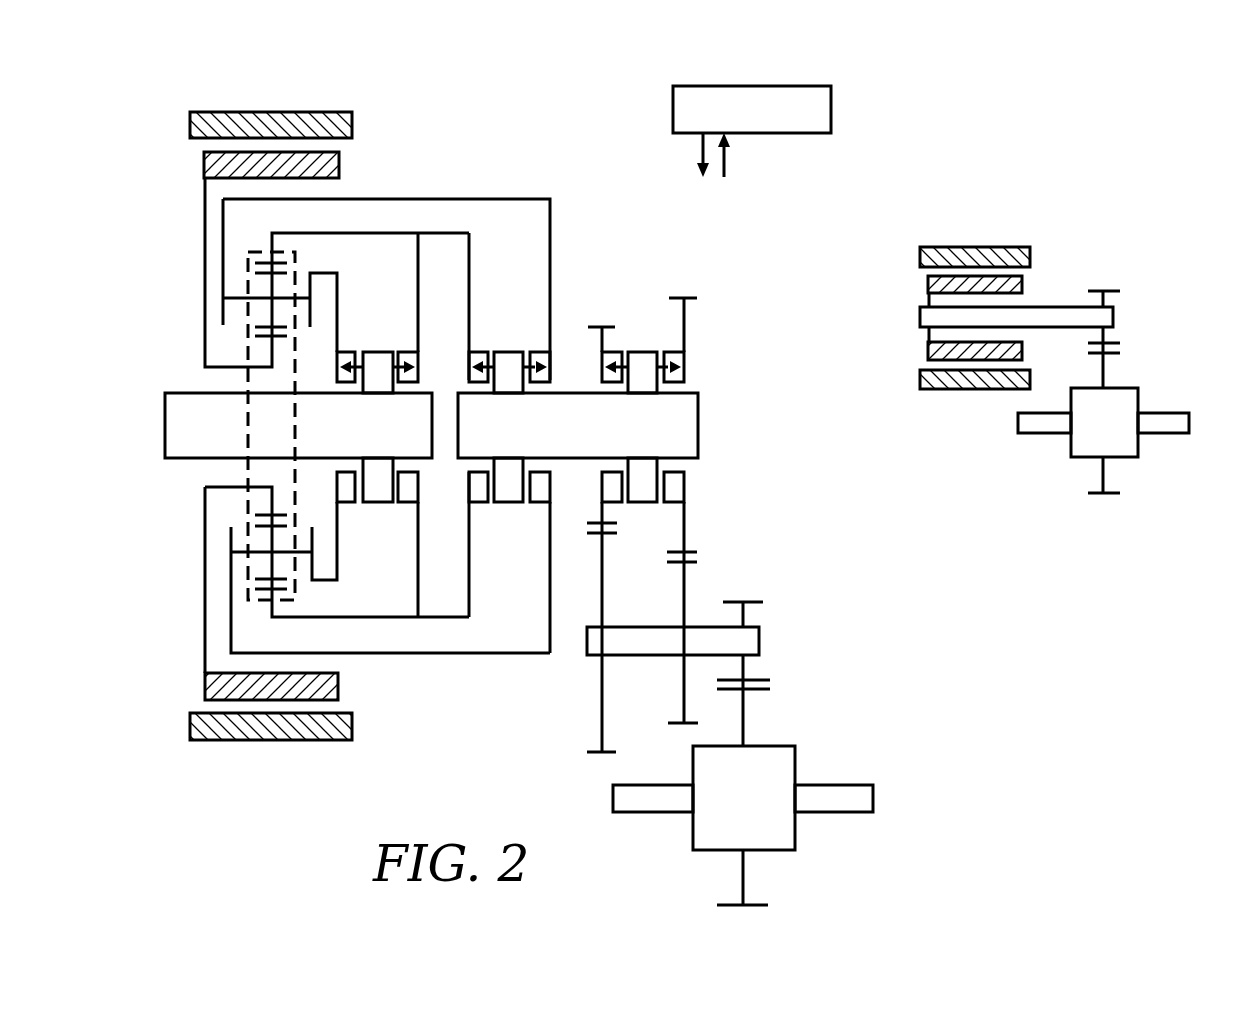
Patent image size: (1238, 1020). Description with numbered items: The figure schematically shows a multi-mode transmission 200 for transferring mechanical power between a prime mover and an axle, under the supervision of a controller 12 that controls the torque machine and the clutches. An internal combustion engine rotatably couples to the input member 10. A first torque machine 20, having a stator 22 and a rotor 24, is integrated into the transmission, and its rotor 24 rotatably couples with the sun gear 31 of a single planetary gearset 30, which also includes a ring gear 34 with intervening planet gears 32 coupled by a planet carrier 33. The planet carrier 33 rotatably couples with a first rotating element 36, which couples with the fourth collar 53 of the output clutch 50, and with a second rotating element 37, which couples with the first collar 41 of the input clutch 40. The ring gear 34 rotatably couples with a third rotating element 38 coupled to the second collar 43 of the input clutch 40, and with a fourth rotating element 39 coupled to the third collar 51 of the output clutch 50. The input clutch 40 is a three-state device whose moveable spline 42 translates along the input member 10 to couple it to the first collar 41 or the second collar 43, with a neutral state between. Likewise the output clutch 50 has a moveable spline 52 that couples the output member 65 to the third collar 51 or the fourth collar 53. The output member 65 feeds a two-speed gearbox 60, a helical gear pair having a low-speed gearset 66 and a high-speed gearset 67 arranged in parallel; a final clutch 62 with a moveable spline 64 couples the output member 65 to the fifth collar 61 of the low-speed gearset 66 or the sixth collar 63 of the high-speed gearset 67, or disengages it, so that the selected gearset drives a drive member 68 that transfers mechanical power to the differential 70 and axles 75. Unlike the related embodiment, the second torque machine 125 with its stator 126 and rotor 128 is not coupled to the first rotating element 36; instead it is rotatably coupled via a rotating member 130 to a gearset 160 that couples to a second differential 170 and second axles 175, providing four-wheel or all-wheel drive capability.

The input member 10 is at (174, 428).
The controller 12 is at (752, 131).
The first torque machine 20 is at (214, 104).
The stator 22 is at (190, 121).
The rotor 24 is at (204, 163).
The single planetary gearset 30 is at (333, 426).
The sun gear 31 is at (258, 333).
The planet gears 32 is at (258, 291).
The planet carrier 33 is at (222, 316).
The ring gear 34 is at (256, 270).
The first rotating element 36 is at (551, 229).
The second rotating element 37 is at (318, 283).
The third rotating element 38 is at (420, 262).
The fourth rotating element 39 is at (470, 276).
The input clutch 40 is at (379, 377).
The first collar 41 is at (347, 382).
The moveable spline 42 is at (375, 364).
The second collar 43 is at (410, 364).
The output clutch 50 is at (547, 389).
The third collar 51 is at (478, 382).
The moveable spline 52 is at (512, 365).
The fourth collar 53 is at (546, 380).
The two-speed gearbox 60 is at (672, 368).
The fifth collar 61 is at (605, 365).
The final clutch 62 is at (648, 355).
The sixth collar 63 is at (690, 365).
The moveable spline 64 is at (640, 366).
The output member 65 is at (699, 427).
The low-speed gearset 66 is at (616, 532).
The high-speed gearset 67 is at (697, 556).
The drive member 68 is at (760, 641).
The differential 70 is at (744, 825).
The axles 75 is at (830, 801).
The second torque machine 125 is at (1024, 222).
The stator 126 is at (1031, 254).
The rotor 128 is at (1023, 285).
The rotating member 130 is at (1114, 317).
The gearset 160 is at (1108, 335).
The second differential 170 is at (1104, 440).
The second axles 175 is at (1043, 426).
The multi-mode transmission 200 is at (822, 168).